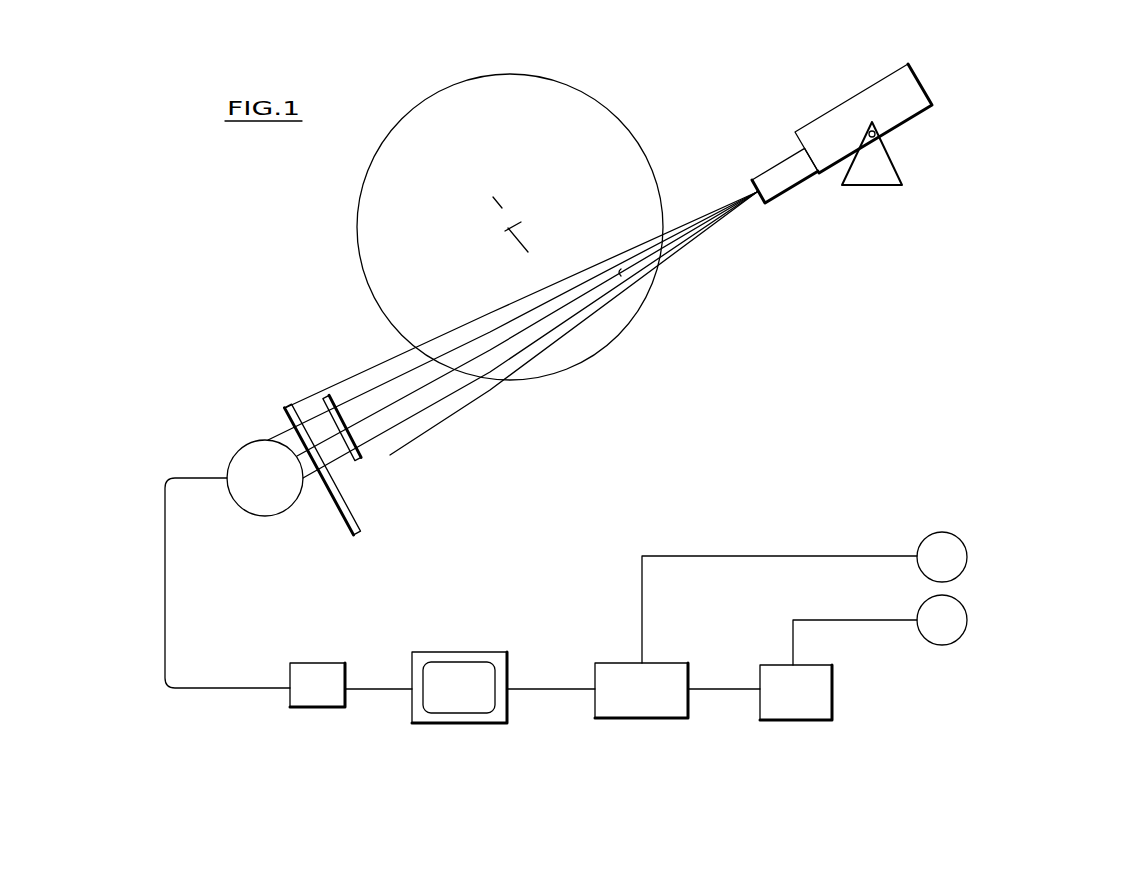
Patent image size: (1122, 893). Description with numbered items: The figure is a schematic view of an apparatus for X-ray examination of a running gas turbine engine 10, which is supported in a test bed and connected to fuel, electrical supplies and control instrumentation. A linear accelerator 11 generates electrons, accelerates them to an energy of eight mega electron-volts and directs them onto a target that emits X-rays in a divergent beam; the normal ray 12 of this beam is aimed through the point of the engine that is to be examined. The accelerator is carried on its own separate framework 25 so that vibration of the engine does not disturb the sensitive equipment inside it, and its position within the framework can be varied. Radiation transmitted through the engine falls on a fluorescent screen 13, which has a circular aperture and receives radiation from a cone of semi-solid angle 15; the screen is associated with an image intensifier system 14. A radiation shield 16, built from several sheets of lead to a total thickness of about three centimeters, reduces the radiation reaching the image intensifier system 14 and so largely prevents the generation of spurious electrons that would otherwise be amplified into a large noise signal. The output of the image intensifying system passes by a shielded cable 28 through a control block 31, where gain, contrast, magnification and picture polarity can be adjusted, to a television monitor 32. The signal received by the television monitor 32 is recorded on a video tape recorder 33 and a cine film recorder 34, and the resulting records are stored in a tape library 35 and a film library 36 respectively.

The gas turbine engine 10 is at (553, 80).
The linear accelerator 11 is at (892, 73).
The normal ray 12 is at (390, 409).
The fluorescent screen 13 is at (362, 463).
The image intensifier system 14 is at (228, 461).
The cone of semi-solid angle 15 is at (627, 271).
The radiation shield 16 is at (357, 535).
The framework 25 is at (883, 143).
The shielded cable 28 is at (168, 593).
The control block 31 is at (323, 708).
The television monitor 32 is at (438, 725).
The video tape recorder 33 is at (630, 720).
The cine film recorder 34 is at (792, 722).
The tape library 35 is at (978, 533).
The film library 36 is at (967, 618).